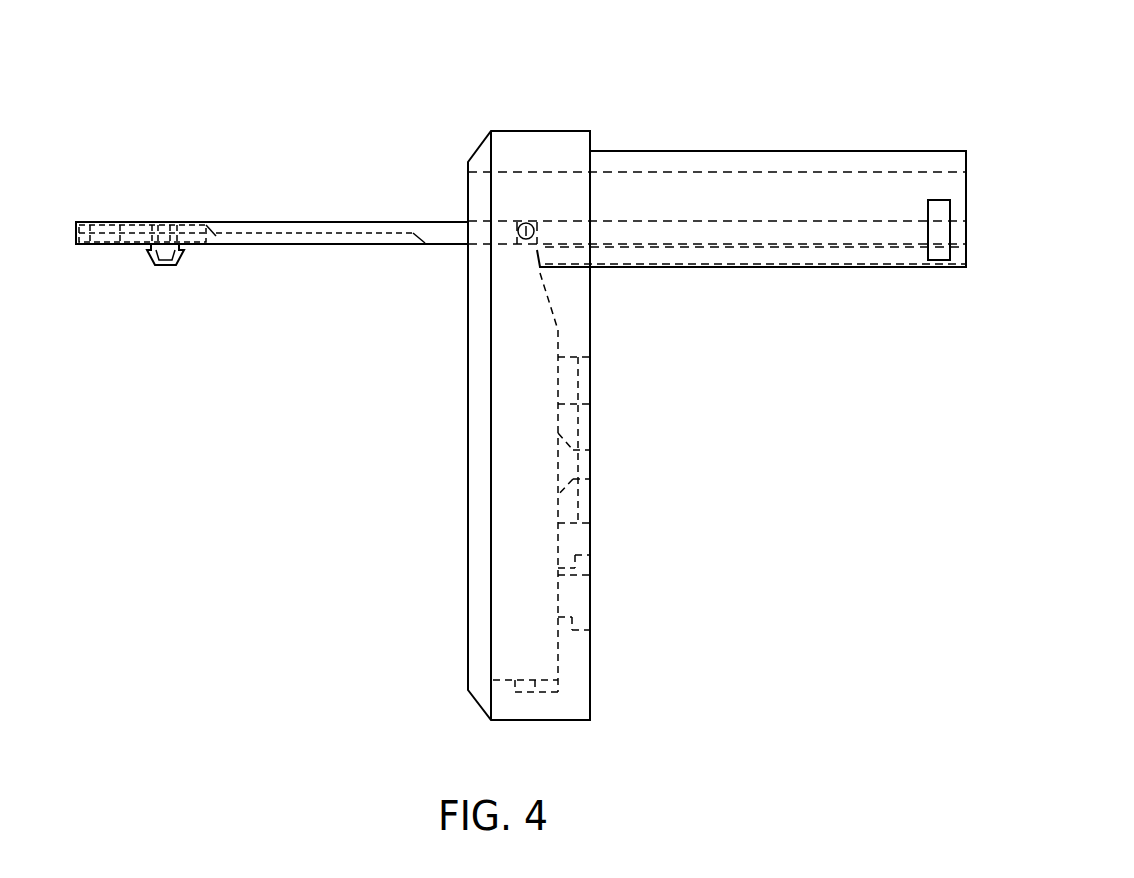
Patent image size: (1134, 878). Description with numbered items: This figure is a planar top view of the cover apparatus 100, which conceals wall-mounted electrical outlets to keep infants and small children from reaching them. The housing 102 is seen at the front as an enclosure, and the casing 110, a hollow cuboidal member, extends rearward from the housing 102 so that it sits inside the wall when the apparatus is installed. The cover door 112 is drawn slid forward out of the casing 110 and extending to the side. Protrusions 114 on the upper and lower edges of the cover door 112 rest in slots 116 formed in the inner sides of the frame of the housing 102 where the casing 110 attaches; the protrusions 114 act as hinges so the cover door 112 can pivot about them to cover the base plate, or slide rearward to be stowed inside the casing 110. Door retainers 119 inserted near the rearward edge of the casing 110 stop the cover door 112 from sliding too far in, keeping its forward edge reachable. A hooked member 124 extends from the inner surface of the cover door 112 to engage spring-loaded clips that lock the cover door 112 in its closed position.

The cover apparatus 100 is at (862, 54).
The housing 102 is at (540, 130).
The casing 110 is at (778, 150).
The cover door 112 is at (313, 221).
The protrusions 114 is at (523, 240).
The slots 116 is at (768, 232).
The door retainers 119 is at (940, 252).
The hooked member 124 is at (165, 268).